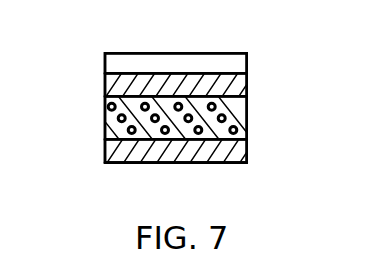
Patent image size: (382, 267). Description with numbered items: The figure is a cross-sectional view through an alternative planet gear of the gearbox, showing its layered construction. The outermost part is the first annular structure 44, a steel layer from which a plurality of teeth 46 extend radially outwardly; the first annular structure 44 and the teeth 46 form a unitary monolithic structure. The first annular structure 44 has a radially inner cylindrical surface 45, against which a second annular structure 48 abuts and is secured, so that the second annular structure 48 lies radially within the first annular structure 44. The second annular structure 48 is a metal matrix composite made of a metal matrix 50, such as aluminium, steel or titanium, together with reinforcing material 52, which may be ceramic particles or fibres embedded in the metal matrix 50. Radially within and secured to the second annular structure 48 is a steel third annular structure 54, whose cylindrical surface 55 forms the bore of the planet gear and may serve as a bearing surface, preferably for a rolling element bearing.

The first annular structure 44 is at (236, 83).
The cylindrical surface 45 is at (163, 94).
The teeth 46 is at (202, 65).
The second annular structure 48 is at (240, 115).
The metal matrix 50 is at (106, 120).
The reinforcing material 52 is at (111, 105).
The third annular structure 54 is at (149, 151).
The cylindrical surface 55 is at (205, 157).